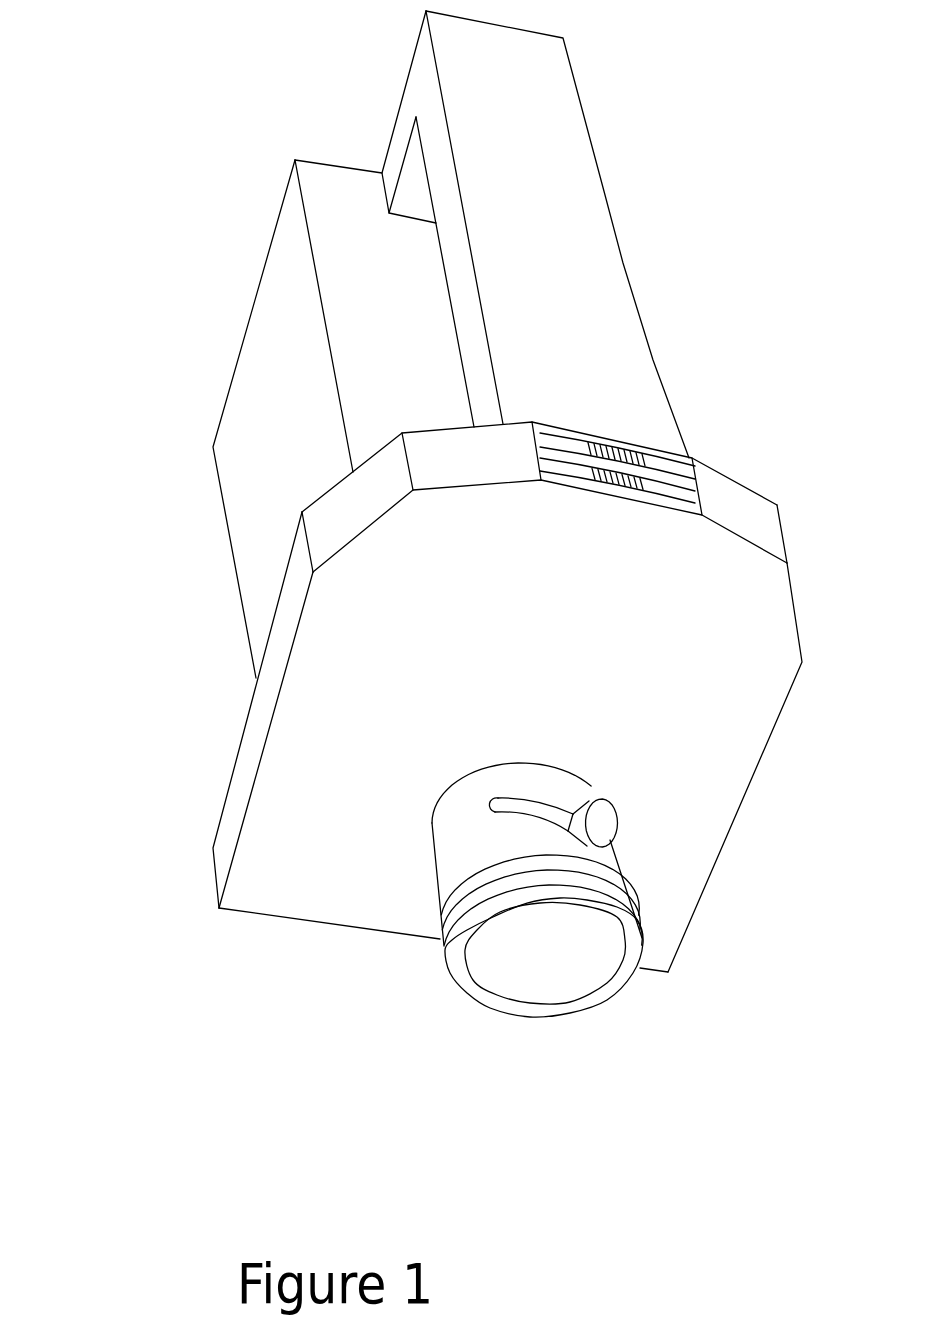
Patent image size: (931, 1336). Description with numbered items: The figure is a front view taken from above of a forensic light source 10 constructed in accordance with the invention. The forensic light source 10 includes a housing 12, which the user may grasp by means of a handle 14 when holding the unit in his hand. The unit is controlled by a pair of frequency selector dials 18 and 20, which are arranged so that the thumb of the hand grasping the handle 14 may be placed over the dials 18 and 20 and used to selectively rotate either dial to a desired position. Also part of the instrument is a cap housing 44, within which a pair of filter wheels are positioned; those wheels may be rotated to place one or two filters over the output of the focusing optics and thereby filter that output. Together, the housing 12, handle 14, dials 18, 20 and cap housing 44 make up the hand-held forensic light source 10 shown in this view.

The forensic light source 10 is at (250, 398).
The housing 12 is at (360, 190).
The handle 14 is at (587, 230).
The frequency selector dial 18 is at (642, 442).
The frequency selector dial 20 is at (647, 477).
The cap housing 44 is at (217, 847).